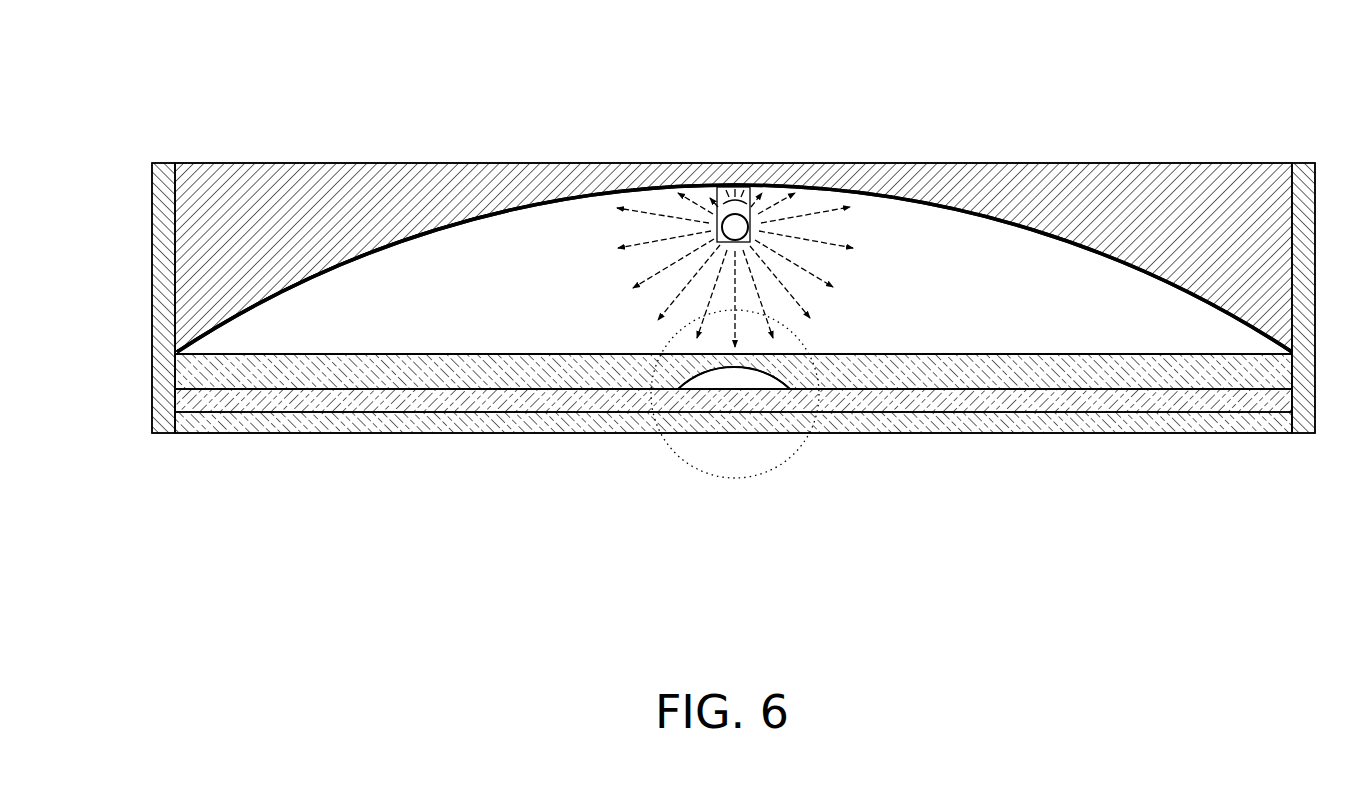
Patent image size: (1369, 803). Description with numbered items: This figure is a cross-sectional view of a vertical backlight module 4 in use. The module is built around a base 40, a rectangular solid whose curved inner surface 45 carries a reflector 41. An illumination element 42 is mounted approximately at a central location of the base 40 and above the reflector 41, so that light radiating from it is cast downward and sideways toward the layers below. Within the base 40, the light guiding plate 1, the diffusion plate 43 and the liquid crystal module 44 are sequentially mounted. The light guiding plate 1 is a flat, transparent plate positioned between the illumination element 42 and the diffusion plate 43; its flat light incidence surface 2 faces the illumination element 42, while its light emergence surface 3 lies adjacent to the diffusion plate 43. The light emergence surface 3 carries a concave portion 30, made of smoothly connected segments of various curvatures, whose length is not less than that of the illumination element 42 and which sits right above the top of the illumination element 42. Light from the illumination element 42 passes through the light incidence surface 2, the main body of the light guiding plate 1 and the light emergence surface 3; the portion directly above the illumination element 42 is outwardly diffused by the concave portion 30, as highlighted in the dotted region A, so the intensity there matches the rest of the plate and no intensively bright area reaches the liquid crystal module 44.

The vertical backlight module 4 is at (134, 90).
The base 40 is at (1105, 183).
The reflector 41 is at (962, 213).
The curved inner surface 45 is at (1018, 223).
The illumination element 42 is at (717, 188).
The light guiding plate 1 is at (1258, 373).
The light incidence surface 2 is at (1247, 352).
The light emergence surface 3 is at (1250, 390).
The diffusion plate 43 is at (1177, 402).
The liquid crystal module 44 is at (1137, 423).
The concave portion 30 is at (732, 368).
The enlarged region A is at (792, 455).